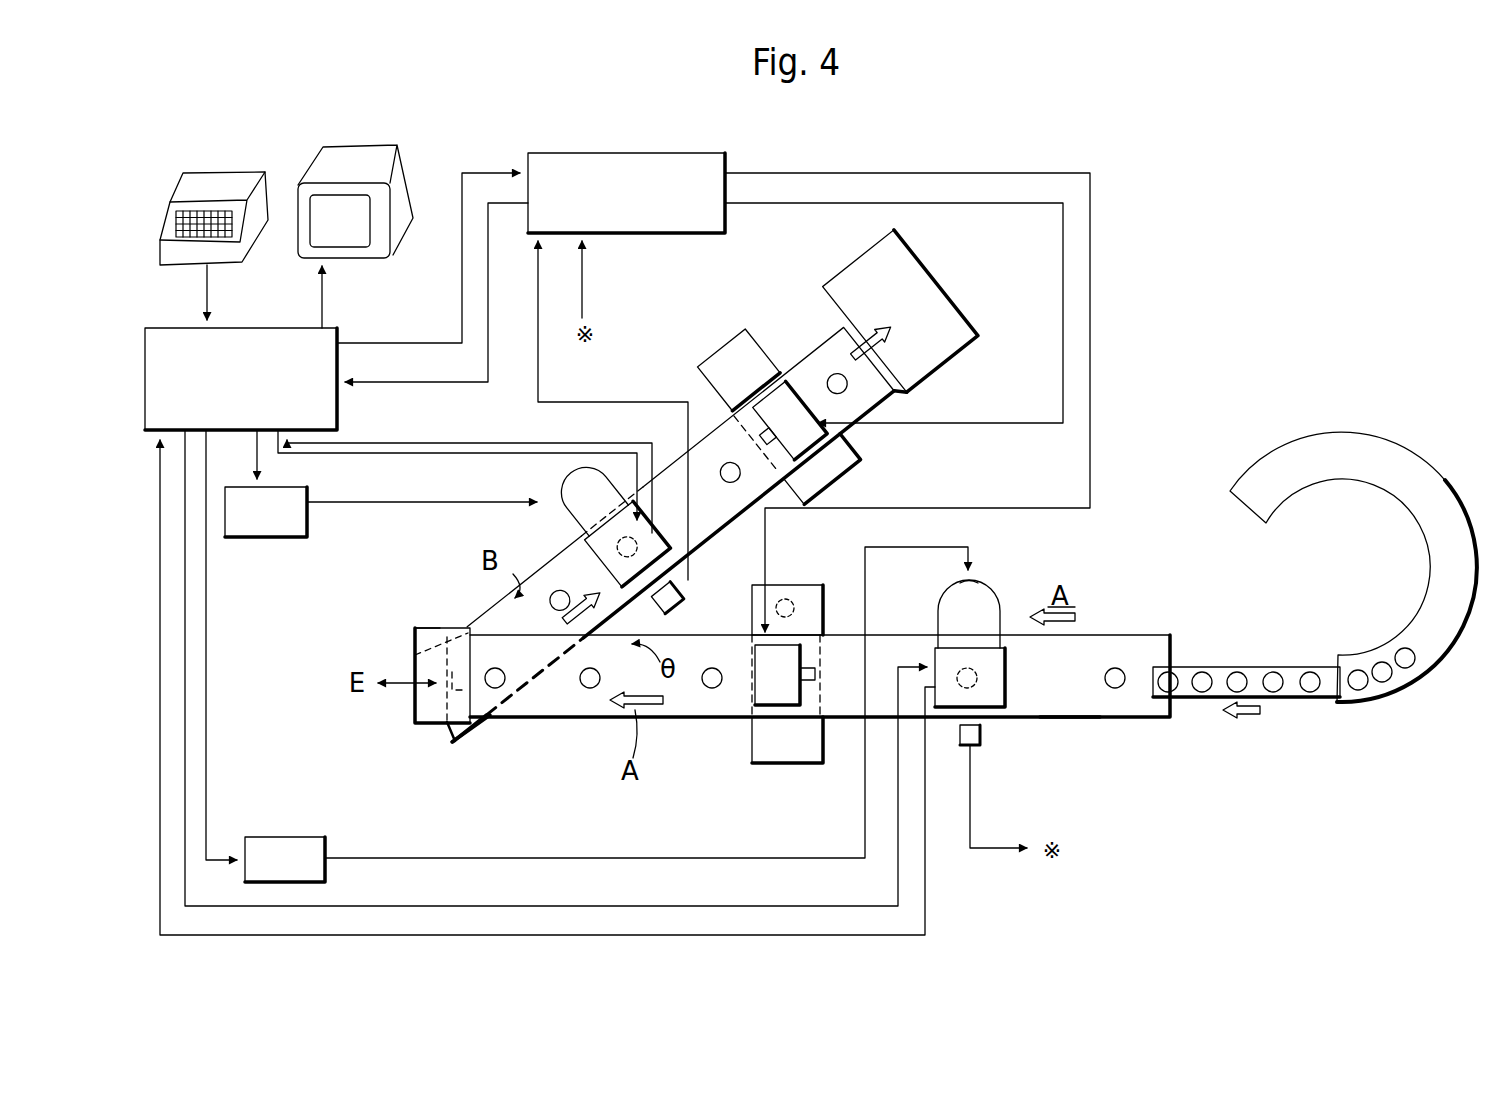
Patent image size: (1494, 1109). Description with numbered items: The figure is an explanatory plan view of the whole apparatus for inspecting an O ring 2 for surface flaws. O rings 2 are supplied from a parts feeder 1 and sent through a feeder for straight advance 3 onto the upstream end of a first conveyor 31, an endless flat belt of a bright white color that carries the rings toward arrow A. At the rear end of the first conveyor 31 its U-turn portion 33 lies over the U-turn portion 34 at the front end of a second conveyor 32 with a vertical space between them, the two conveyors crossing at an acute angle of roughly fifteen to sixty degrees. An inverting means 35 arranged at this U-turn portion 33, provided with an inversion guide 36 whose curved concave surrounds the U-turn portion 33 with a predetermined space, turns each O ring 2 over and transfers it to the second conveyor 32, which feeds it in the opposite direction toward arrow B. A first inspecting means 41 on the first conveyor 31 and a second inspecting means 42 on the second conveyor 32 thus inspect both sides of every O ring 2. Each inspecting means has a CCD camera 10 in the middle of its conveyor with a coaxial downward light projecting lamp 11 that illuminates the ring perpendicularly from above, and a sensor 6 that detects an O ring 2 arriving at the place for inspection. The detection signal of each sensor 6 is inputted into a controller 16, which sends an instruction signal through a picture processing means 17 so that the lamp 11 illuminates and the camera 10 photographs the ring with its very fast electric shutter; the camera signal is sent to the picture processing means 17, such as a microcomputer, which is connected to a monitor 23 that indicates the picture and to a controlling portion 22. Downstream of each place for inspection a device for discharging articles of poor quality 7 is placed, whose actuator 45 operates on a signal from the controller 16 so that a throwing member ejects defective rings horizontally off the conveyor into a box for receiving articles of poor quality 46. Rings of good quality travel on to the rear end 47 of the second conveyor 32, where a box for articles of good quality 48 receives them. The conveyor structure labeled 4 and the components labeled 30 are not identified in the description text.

The parts feeder 1 is at (1452, 660).
The O ring 2 is at (590, 688).
The feeder for straight advance 3 is at (1226, 667).
The conveyor 4 is at (1116, 628).
The sensor 6 is at (958, 752).
The device for discharging articles of poor quality 7 is at (798, 760).
The CCD camera 10 is at (928, 662).
The coaxial downward light projecting lamp 11 is at (985, 584).
The controller 16 is at (643, 224).
The picture processing means 17 is at (243, 393).
The controlling portion 22 is at (210, 172).
The monitor 23 is at (350, 160).
The driver 30 is at (275, 684).
The first conveyor 31 is at (1070, 726).
The second conveyor 32 is at (500, 594).
The U-turn portion 33 is at (413, 650).
The U-turn portion 34 is at (413, 707).
The inverting means 35 is at (418, 730).
The inversion guide 36 is at (410, 628).
The first inspecting means 41 is at (982, 624).
The second inspecting means 42 is at (596, 510).
The actuator 45 is at (770, 696).
The box for receiving articles of poor quality 46 is at (782, 750).
The rear end of the second conveyor 47 is at (905, 400).
The box for articles of good quality 48 is at (925, 283).